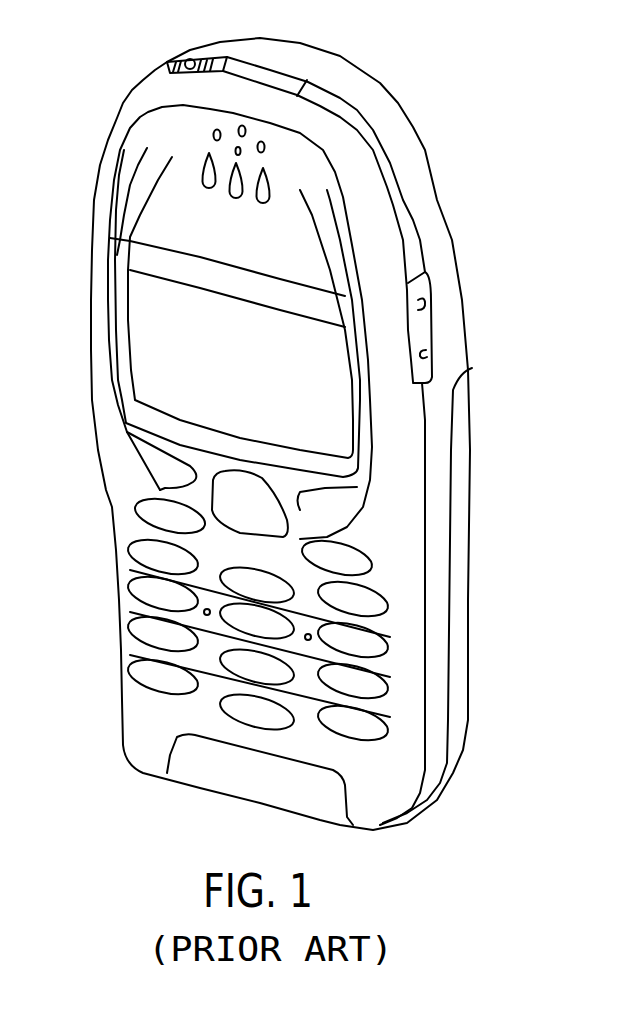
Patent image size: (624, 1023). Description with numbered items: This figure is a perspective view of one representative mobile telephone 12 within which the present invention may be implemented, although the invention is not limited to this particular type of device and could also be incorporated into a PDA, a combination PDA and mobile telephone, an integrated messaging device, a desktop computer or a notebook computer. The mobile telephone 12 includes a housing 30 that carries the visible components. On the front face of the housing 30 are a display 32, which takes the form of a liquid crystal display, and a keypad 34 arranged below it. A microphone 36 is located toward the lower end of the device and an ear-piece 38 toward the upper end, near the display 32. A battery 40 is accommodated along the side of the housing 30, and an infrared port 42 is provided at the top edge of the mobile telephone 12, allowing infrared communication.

The mobile telephone 12 is at (407, 47).
The housing 30 is at (437, 200).
The display 32 is at (327, 406).
The keypad 34 is at (353, 731).
The microphone 36 is at (193, 770).
The ear-piece 38 is at (207, 157).
The battery 40 is at (462, 712).
The infrared port 42 is at (265, 72).